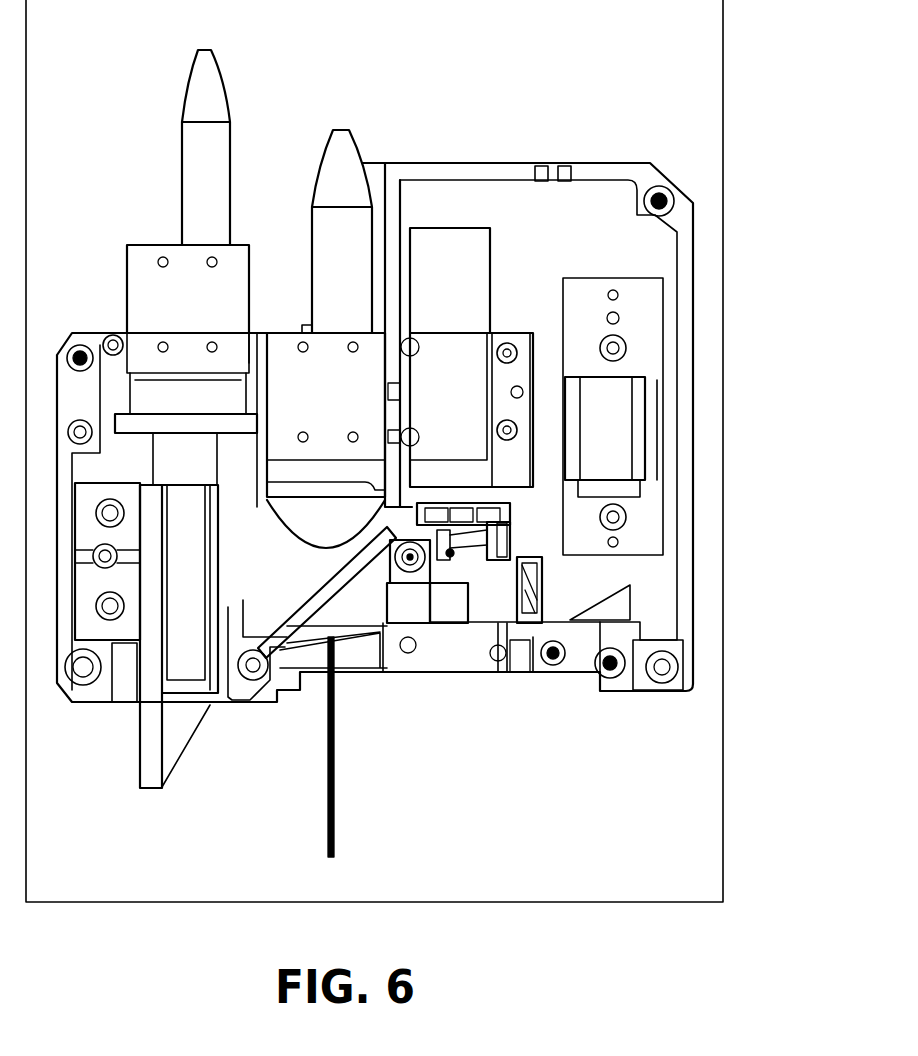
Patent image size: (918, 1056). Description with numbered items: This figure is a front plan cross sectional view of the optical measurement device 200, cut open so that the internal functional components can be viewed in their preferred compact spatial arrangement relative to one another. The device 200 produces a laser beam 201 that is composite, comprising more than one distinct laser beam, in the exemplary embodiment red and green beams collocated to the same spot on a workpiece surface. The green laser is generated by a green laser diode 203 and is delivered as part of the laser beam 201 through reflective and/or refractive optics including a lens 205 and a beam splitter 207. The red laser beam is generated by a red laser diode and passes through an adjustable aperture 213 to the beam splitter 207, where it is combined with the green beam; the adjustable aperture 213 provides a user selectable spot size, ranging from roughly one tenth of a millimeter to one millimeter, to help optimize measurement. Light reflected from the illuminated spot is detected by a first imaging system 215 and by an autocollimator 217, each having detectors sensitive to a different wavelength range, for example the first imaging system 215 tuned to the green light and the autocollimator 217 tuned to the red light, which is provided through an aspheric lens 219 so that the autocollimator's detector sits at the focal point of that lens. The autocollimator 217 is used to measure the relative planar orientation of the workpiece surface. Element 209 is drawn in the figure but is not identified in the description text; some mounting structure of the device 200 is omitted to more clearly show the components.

The optical measurement device 200 is at (375, 377).
The laser beam 201 is at (283, 747).
The green laser diode 203 is at (480, 353).
The lens 205 is at (487, 503).
The beam splitter 207 is at (441, 612).
The motor housing 209 is at (681, 437).
The adjustable aperture 213 is at (565, 662).
The first imaging system 215 is at (166, 419).
The autocollimator 217 is at (317, 335).
The aspheric lens 219 is at (315, 533).